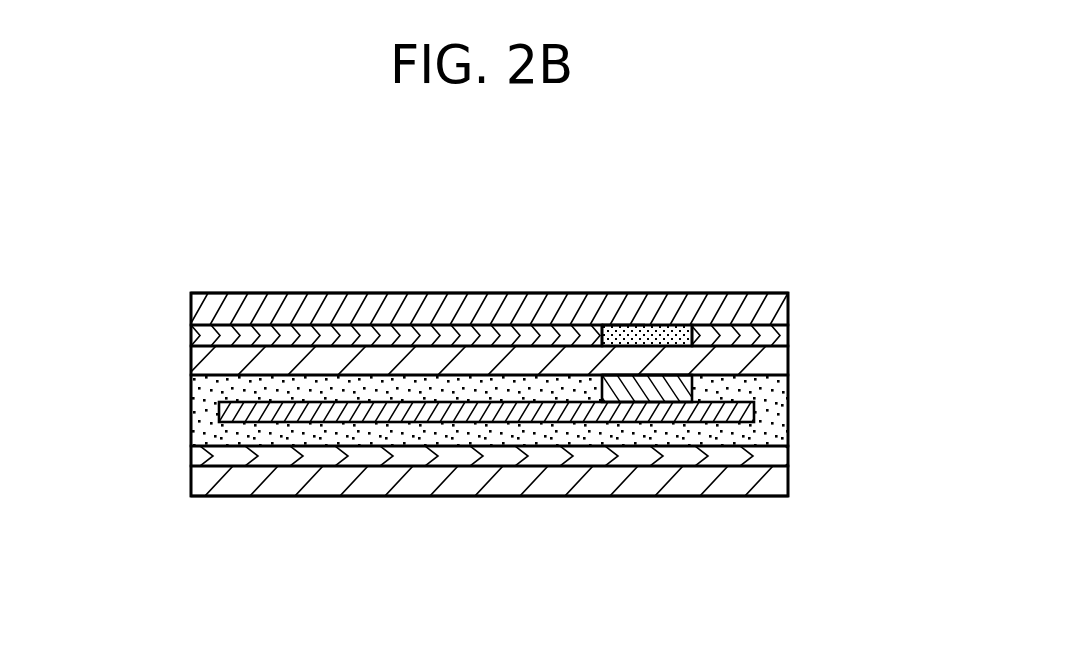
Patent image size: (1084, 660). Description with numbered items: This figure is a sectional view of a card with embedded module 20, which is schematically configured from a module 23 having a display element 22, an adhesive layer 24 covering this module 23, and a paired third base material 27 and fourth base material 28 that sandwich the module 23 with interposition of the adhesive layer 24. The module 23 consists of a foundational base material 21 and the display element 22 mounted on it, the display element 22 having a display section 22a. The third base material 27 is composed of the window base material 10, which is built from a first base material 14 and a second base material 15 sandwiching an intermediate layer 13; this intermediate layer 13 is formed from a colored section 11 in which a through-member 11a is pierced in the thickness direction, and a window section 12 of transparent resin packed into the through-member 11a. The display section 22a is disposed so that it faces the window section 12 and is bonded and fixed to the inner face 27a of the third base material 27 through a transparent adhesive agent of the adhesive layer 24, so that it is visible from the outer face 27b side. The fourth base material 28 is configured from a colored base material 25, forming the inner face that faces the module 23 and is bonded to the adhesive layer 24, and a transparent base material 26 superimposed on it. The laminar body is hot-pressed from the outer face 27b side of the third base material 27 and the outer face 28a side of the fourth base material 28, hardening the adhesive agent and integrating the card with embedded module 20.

The window base material 10 is at (781, 287).
The colored section 11 is at (738, 332).
The through-member 11a is at (618, 328).
The window section 12 is at (648, 335).
The intermediate layer 13 is at (688, 193).
The first base material 14 is at (773, 362).
The second base material 15 is at (772, 307).
The card with embedded module 20 is at (718, 226).
The foundational base material 21 is at (754, 412).
The display element 22 is at (692, 387).
The display section 22a is at (633, 375).
The module 23 is at (242, 389).
The adhesive layer 24 is at (780, 433).
The colored base material 25 is at (205, 458).
The transparent base material 26 is at (200, 482).
The third base material 27 is at (506, 325).
The inner face 27a is at (190, 393).
The outer face 27b is at (415, 293).
The fourth base material 28 is at (100, 432).
The outer face 28a is at (478, 496).